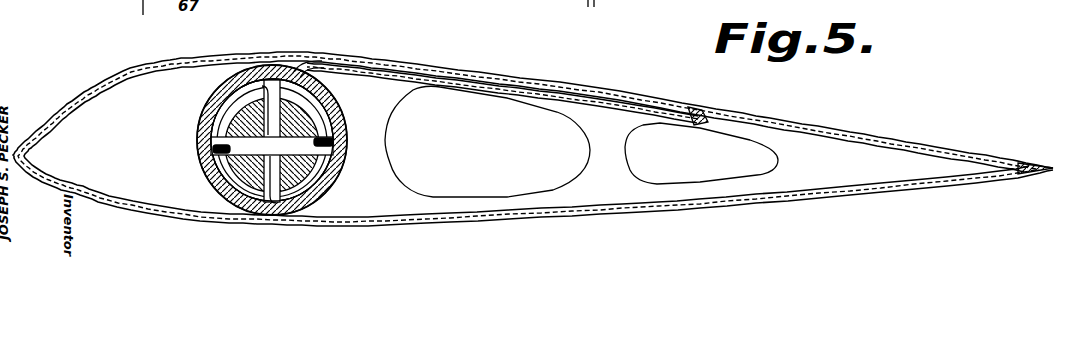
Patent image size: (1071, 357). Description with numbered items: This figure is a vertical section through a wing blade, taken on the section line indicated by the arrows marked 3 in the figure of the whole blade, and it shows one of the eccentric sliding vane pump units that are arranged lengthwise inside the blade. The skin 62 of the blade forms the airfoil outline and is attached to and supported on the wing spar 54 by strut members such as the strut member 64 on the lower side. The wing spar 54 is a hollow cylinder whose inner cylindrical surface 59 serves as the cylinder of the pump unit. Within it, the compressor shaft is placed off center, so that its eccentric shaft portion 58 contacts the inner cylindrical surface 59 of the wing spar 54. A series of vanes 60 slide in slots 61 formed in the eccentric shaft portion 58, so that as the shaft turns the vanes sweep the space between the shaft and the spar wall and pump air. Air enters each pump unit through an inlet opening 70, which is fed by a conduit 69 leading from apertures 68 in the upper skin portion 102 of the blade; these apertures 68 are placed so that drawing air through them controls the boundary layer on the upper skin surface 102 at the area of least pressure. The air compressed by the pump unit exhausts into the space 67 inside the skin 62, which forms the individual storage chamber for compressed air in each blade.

The skin 62 is at (148, 57).
The space 67 is at (360, 132).
The inner cylindrical surface 59 is at (212, 101).
The wing spar 54 is at (200, 123).
The vanes 60 is at (212, 142).
The slots 61 is at (245, 160).
The inlet openings 70 is at (306, 77).
The eccentric shaft portion 58 is at (297, 110).
The conduits 69 is at (612, 99).
The apertures 68 is at (702, 111).
The upper skin portion 102 is at (793, 118).
The strut member 64 is at (545, 207).
The Figure 3 is at (281, 29).